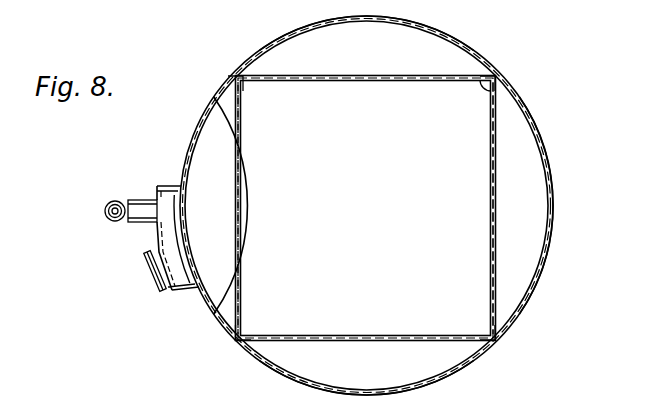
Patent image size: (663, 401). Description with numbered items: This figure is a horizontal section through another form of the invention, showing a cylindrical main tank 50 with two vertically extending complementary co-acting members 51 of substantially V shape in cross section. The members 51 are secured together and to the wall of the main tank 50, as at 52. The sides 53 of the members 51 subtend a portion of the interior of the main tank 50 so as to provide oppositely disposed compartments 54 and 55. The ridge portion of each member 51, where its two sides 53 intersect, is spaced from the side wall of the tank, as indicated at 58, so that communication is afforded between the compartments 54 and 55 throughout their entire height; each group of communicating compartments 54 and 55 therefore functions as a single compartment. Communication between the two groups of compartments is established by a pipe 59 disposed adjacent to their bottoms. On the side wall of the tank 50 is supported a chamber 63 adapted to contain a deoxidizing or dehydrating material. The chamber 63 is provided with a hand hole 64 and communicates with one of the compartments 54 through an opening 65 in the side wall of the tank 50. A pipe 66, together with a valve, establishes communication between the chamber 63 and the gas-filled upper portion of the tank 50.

The cylindrical main tank 50 is at (540, 128).
The complementary co-acting members 51 is at (241, 145).
The securing points 52 is at (492, 76).
The sides 53 is at (333, 82).
The compartments 54 is at (202, 173).
The compartments 55 is at (363, 69).
The spacing of ridge portion 58 is at (237, 78).
The pipe 59 is at (484, 91).
The chamber 63 is at (160, 233).
The hand hole 64 is at (160, 272).
The opening 65 is at (187, 246).
The pipe 66 is at (140, 206).